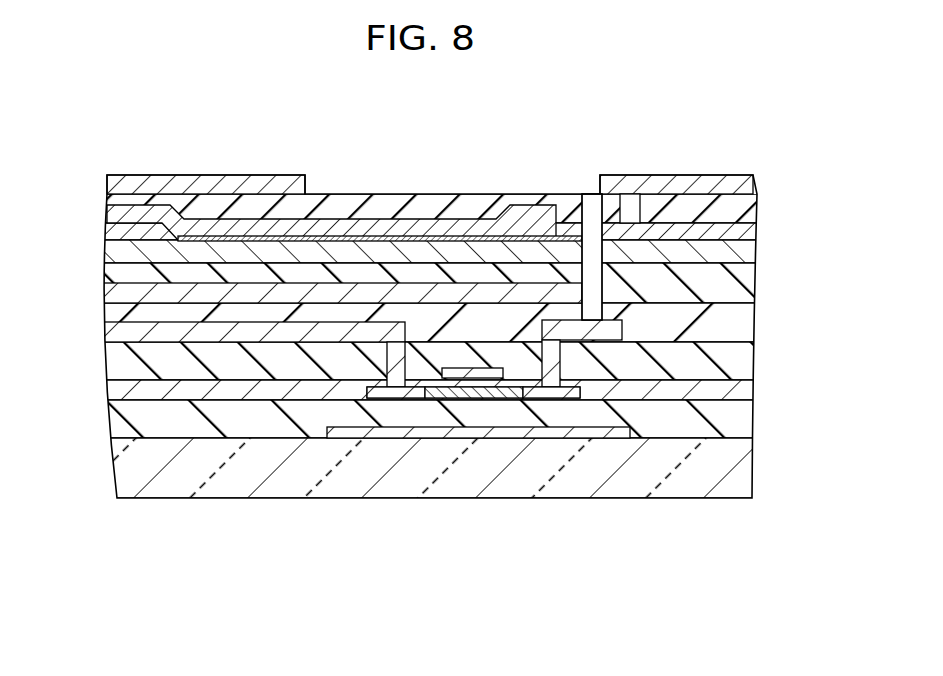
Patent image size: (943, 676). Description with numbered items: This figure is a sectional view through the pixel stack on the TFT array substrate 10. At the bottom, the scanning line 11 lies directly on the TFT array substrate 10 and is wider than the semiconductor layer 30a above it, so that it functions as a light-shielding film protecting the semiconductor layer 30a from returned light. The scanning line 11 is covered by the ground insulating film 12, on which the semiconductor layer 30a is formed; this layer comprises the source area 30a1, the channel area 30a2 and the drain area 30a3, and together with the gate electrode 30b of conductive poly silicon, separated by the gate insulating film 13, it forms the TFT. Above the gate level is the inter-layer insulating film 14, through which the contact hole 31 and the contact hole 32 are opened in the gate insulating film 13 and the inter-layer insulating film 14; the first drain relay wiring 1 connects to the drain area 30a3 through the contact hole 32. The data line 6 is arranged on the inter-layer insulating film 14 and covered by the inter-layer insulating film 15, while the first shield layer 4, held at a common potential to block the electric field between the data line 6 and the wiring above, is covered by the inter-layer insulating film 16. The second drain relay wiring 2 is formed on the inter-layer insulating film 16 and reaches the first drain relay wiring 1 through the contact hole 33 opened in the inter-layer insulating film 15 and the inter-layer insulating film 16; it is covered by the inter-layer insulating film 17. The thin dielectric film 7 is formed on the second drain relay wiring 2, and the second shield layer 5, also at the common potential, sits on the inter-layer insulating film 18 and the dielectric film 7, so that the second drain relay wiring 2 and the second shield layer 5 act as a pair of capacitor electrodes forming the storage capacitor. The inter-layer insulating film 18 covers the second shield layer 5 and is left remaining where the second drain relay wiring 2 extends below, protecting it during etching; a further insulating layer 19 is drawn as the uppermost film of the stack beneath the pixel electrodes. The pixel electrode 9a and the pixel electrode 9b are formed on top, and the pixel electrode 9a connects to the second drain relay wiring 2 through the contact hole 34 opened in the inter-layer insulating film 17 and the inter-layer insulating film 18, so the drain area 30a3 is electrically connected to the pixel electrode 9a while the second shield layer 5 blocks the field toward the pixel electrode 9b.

The first drain relay wiring 1 is at (615, 330).
The second drain relay wiring 2 is at (578, 250).
The first shield layer 4 is at (115, 300).
The second shield layer 5 is at (115, 213).
The data line 6 is at (115, 330).
The dielectric film 7 is at (375, 236).
The pixel electrode 9a is at (718, 185).
The pixel electrode 9b is at (243, 180).
The TFT array substrate 10 is at (745, 470).
The scanning line 11 is at (600, 440).
The ground insulating film 12 is at (745, 430).
The gate insulating film 13 is at (745, 394).
The inter-layer insulating film 14 is at (745, 350).
The inter-layer insulating film 15 is at (745, 325).
The inter-layer insulating film 16 is at (745, 288).
The inter-layer insulating film 17 is at (750, 252).
The inter-layer insulating film 18 is at (758, 222).
The insulating layer 19 is at (757, 186).
The semiconductor layer 30a is at (365, 562).
The source area 30a1 is at (397, 400).
The channel area 30a2 is at (463, 400).
The drain area 30a3 is at (543, 400).
The gate electrode 30b is at (470, 370).
The contact hole 31 is at (395, 346).
The contact hole 32 is at (556, 360).
The contact hole 33 is at (597, 212).
The contact hole 34 is at (631, 200).